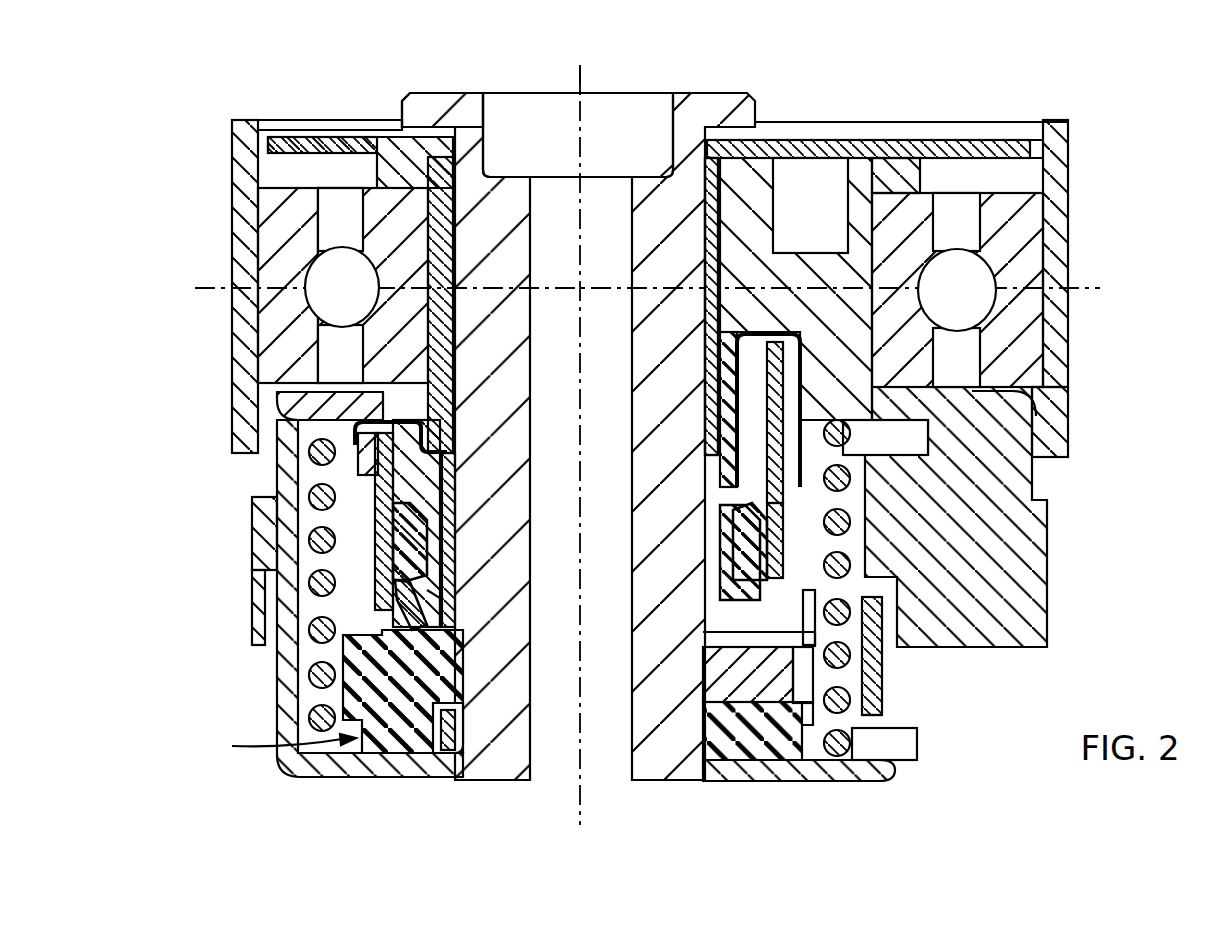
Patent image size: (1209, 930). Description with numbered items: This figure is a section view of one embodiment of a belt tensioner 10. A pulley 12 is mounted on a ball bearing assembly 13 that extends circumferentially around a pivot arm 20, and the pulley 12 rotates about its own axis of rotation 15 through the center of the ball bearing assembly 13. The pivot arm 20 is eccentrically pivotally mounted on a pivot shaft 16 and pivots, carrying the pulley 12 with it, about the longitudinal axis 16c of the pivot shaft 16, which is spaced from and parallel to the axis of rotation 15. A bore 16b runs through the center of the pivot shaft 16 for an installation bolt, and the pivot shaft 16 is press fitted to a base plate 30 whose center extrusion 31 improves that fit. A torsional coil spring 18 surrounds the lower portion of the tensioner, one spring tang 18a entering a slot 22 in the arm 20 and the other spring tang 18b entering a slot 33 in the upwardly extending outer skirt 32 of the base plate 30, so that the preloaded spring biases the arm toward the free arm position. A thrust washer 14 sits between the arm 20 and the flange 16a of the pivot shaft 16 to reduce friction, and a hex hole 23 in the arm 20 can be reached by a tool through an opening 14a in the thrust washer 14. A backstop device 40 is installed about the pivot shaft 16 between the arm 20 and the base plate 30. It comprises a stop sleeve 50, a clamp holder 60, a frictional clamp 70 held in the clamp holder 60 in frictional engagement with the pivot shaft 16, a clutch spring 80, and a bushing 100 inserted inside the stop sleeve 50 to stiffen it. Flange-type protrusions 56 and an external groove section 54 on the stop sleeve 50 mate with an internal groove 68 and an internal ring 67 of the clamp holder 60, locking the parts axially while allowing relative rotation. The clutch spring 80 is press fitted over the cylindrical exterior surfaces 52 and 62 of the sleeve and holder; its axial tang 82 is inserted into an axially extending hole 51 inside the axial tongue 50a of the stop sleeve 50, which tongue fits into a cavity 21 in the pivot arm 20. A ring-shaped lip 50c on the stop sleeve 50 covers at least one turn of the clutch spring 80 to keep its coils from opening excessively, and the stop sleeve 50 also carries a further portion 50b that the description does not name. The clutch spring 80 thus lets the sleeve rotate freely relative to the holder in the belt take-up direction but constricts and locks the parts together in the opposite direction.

The tensioner 10 is at (1126, 100).
The pulley 12 is at (1058, 174).
The ball bearing assembly 13 is at (1000, 205).
The thrust washer 14 is at (390, 160).
The opening 14a is at (768, 148).
The axis of rotation 15 is at (649, 170).
The pivot shaft 16 is at (471, 125).
The flange 16a is at (445, 105).
The bore 16b is at (547, 205).
The longitudinal axis 16c is at (582, 88).
The torsional coil spring 18 is at (310, 539).
The spring tang 18a is at (900, 437).
The spring tang 18b is at (908, 745).
The pivot arm 20 is at (990, 537).
The cavity 21 is at (808, 323).
The slot 22 is at (923, 425).
The hex hole 23 is at (805, 190).
The base plate 30 is at (292, 755).
The center extrusion 31 is at (455, 713).
The outer skirt 32 is at (877, 672).
The slot 33 is at (877, 720).
The backstop device 40 is at (275, 739).
The stop sleeve 50 is at (363, 471).
The axial tongue 50a is at (757, 397).
The seal case flange 50b is at (370, 432).
The ring-shaped lip 50c is at (367, 459).
The axially extending hole 51 is at (803, 337).
The cylindrical exterior surface 52 is at (792, 478).
The external groove section 54 is at (722, 549).
The flange-type protrusions 56 is at (437, 610).
The clamp holder 60 is at (777, 750).
The cylindrical exterior surface 62 is at (775, 560).
The internal ring 67 is at (735, 575).
The internal groove 68 is at (432, 606).
The frictional clamp 70 is at (732, 686).
The clutch spring 80 is at (310, 577).
The axial tang 82 is at (773, 371).
The bushing 100 is at (452, 498).